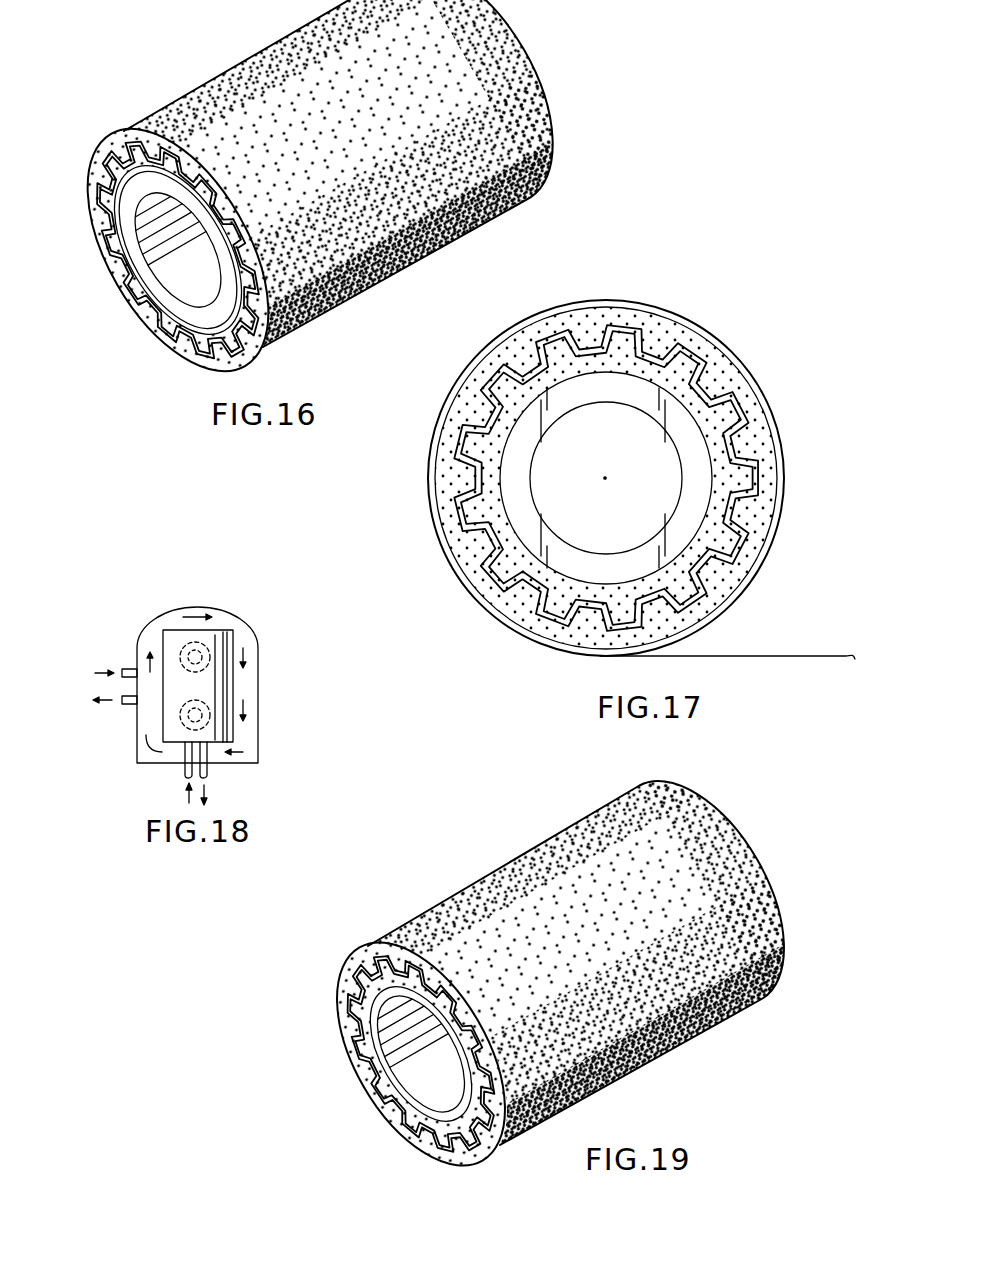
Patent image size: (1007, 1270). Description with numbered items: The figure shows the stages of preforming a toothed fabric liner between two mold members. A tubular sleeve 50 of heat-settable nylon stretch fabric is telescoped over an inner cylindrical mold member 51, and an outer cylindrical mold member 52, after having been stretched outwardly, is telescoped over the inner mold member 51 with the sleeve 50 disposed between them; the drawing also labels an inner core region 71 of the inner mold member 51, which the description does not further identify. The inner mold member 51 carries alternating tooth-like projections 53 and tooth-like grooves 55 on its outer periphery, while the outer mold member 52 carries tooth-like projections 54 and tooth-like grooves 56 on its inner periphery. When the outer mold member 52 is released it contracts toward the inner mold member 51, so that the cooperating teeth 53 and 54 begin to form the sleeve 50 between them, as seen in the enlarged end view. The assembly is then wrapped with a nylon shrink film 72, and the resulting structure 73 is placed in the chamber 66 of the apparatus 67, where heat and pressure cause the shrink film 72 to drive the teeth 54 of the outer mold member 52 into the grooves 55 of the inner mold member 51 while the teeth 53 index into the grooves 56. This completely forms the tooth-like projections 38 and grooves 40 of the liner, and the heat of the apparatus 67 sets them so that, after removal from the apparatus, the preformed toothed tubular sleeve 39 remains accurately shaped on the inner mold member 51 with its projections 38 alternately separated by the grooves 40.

In FIG. 19, the tooth-like projections 38 is at (472, 1062).
In FIG. 19, the toothed tubular sleeve 39 is at (381, 955).
In FIG. 19, the grooves 40 is at (390, 1108).
In FIG. 16, the tubular sleeve 50 is at (137, 300).
In FIG. 17, the tubular sleeve 50 is at (487, 563).
In FIG. 16, the inner cylindrical mold member 51 is at (117, 202).
In FIG. 17, the inner cylindrical mold member 51 is at (730, 481).
In FIG. 19, the inner cylindrical mold member 51 is at (367, 995).
In FIG. 16, the outer cylindrical mold member 52 is at (188, 94).
In FIG. 17, the outer cylindrical mold member 52 is at (748, 446).
In FIG. 19, the outer cylindrical mold member 52 is at (553, 838).
In FIG. 17, the tooth-like projections 53 is at (655, 342).
In FIG. 19, the tooth-like projections 53 is at (380, 1082).
In FIG. 17, the tooth-like projections 54 is at (473, 535).
In FIG. 19, the tooth-like projections 54 is at (437, 1150).
In FIG. 17, the tooth-like grooves 55 is at (585, 496).
In FIG. 19, the tooth-like grooves 55 is at (447, 1137).
In FIG. 17, the tooth-like grooves 56 is at (653, 330).
In FIG. 19, the tooth-like grooves 56 is at (363, 1083).
In FIG. 18, the chamber 66 is at (153, 636).
In FIG. 18, the apparatus 67 is at (260, 650).
In FIG. 16, the core 71 is at (135, 255).
In FIG. 17, the core 71 is at (676, 437).
In FIG. 19, the core 71 is at (372, 1027).
In FIG. 17, the nylon shrink film 72 is at (767, 656).
In FIG. 18, the resulting structure 73 is at (233, 683).